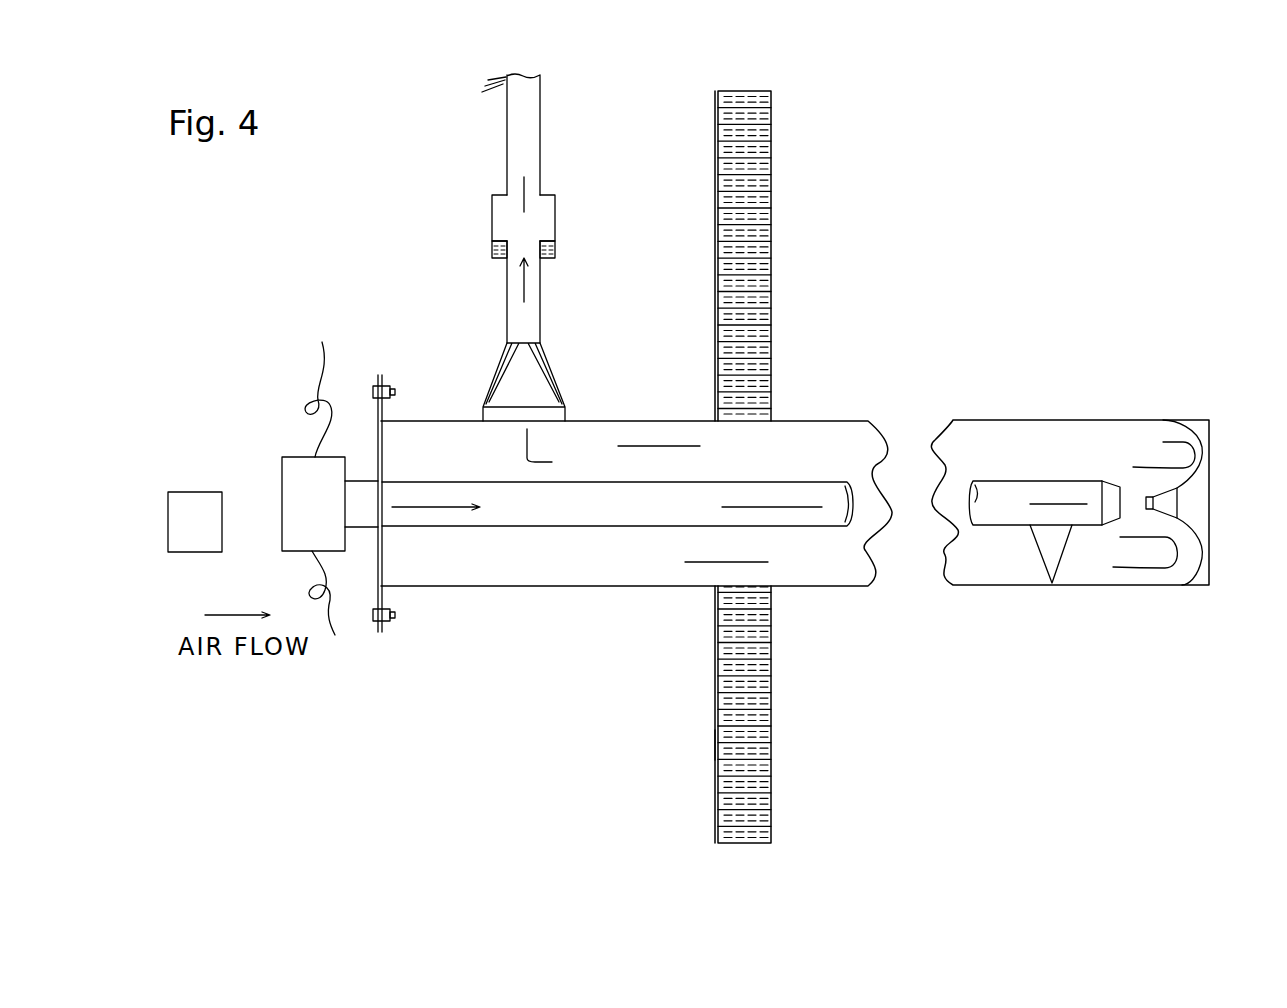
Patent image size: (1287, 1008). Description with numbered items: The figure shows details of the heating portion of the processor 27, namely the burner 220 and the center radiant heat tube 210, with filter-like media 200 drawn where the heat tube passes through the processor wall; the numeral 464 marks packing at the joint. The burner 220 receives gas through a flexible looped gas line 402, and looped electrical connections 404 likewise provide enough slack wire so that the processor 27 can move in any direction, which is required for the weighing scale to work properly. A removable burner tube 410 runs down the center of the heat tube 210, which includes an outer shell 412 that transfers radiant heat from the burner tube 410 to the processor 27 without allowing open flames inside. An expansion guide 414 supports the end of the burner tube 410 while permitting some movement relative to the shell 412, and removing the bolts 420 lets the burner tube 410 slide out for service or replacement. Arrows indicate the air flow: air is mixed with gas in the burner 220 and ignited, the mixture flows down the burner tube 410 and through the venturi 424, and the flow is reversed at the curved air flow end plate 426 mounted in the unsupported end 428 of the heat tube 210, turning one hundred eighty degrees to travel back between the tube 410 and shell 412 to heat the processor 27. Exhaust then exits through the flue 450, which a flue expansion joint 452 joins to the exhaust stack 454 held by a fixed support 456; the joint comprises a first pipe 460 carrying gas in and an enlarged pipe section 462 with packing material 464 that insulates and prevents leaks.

The processor 27 is at (716, 740).
The filter media 200 is at (757, 765).
The center radiant heat tube 210 is at (1105, 489).
The burner 220 is at (295, 475).
The flexible looped gas line 402 is at (317, 360).
The looped electrical connections 404 is at (305, 568).
The removable burner tube 410 is at (755, 490).
The outer shell 412 is at (1000, 430).
The expansion guide 414 is at (1047, 545).
The bolts 420 is at (392, 620).
The venturi 424 is at (1110, 495).
The air flow end plate 426 is at (1202, 520).
The unsupported end 428 is at (1210, 500).
The flue 450 is at (553, 372).
The flue expansion joint 452 is at (557, 252).
The exhaust stack 454 is at (530, 160).
The fixed support 456 is at (483, 93).
The first pipe 460 is at (515, 310).
The enlarged pipe section 462 is at (508, 220).
The seal 464 is at (492, 254).